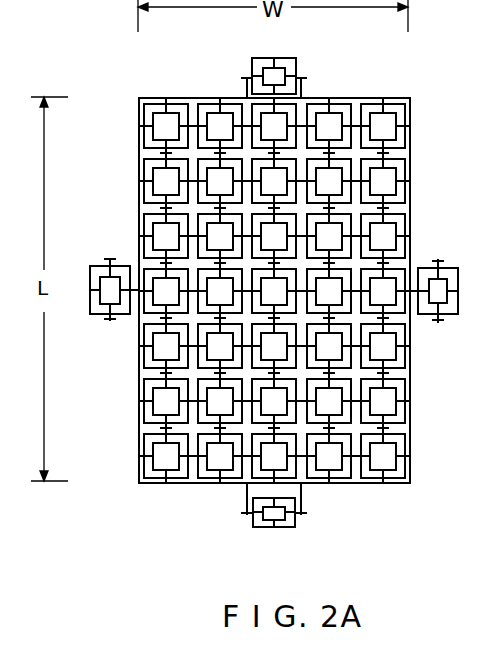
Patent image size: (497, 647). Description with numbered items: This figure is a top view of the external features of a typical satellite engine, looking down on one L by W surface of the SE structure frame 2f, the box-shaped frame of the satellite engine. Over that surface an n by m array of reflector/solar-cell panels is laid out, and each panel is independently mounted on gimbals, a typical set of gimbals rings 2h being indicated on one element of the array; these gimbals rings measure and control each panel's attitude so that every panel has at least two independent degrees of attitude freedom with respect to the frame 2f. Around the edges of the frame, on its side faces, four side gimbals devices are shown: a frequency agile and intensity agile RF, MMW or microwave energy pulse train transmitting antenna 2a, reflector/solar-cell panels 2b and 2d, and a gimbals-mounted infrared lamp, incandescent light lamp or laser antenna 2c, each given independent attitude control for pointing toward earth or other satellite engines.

The energy pulse train transmitting antenna 2a is at (105, 302).
The reflector/solar-cell panel 2b is at (284, 68).
The gimbals mounted lamp or laser antenna 2c is at (440, 304).
The reflector/solar-cell panel 2d is at (285, 517).
The SE structure frame 2f is at (372, 485).
The set of gimbals rings 2h is at (399, 398).